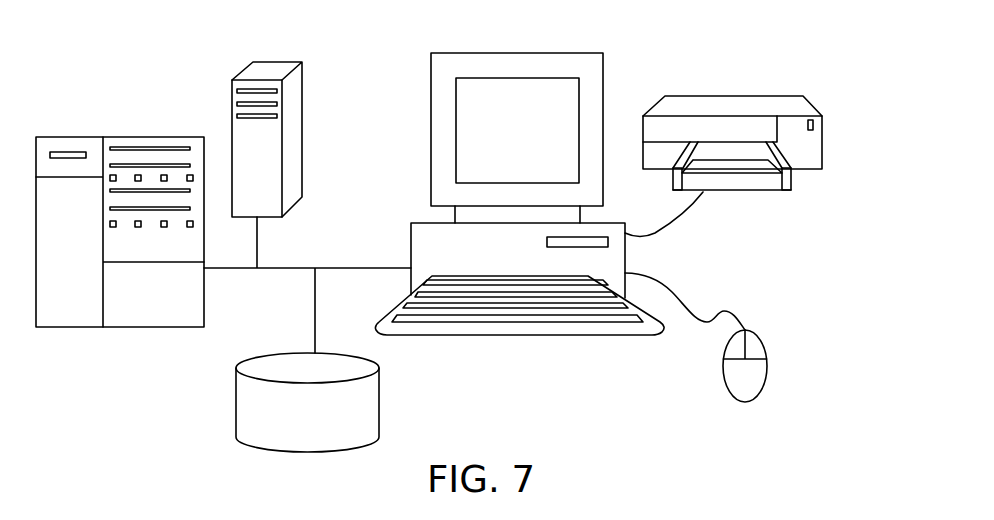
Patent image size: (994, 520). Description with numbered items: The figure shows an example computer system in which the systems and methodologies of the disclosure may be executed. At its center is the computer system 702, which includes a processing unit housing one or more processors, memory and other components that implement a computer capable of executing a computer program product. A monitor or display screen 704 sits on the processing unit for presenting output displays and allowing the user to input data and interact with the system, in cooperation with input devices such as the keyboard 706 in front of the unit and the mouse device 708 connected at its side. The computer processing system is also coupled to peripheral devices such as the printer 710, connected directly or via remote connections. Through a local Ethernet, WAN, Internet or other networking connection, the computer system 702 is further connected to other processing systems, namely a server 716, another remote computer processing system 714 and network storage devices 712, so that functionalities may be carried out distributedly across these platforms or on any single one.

The computer system 702 is at (420, 242).
The display screen 704 is at (532, 53).
The keyboard 706 is at (559, 335).
The mouse device 708 is at (766, 380).
The printer 710 is at (738, 96).
The network storage devices 712 is at (236, 404).
The remote computer processing system 714 is at (333, 110).
The server 716 is at (167, 137).